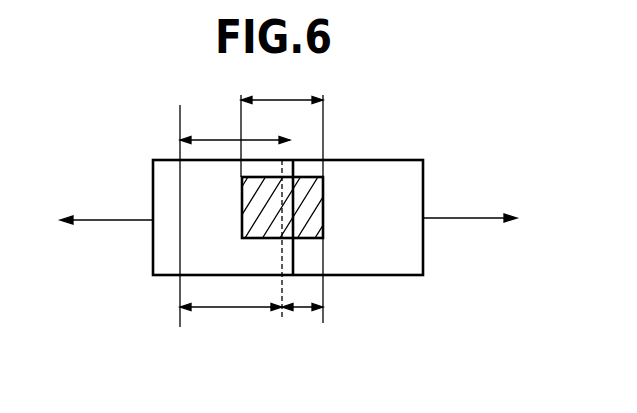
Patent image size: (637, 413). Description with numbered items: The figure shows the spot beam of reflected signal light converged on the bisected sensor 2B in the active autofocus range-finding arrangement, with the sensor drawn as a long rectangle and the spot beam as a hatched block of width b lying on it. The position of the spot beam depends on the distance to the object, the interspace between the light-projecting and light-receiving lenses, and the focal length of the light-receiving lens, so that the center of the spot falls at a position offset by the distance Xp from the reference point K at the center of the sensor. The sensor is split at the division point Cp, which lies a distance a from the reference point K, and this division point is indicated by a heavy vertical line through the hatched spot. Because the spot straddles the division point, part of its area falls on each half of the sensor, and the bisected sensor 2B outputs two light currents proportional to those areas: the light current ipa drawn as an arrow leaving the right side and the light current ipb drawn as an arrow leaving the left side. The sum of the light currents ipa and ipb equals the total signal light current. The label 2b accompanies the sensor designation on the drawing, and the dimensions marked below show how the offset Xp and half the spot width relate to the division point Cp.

The bisected sensor 2B is at (388, 160).
The permanent magnet (hatched) 2b is at (281, 207).
The division point Cp is at (293, 160).
The reference point K is at (182, 295).
The distance a is at (235, 130).
The width b is at (282, 90).
The distance Xp is at (231, 324).
The light current ipa is at (455, 218).
The light current ipb is at (125, 220).